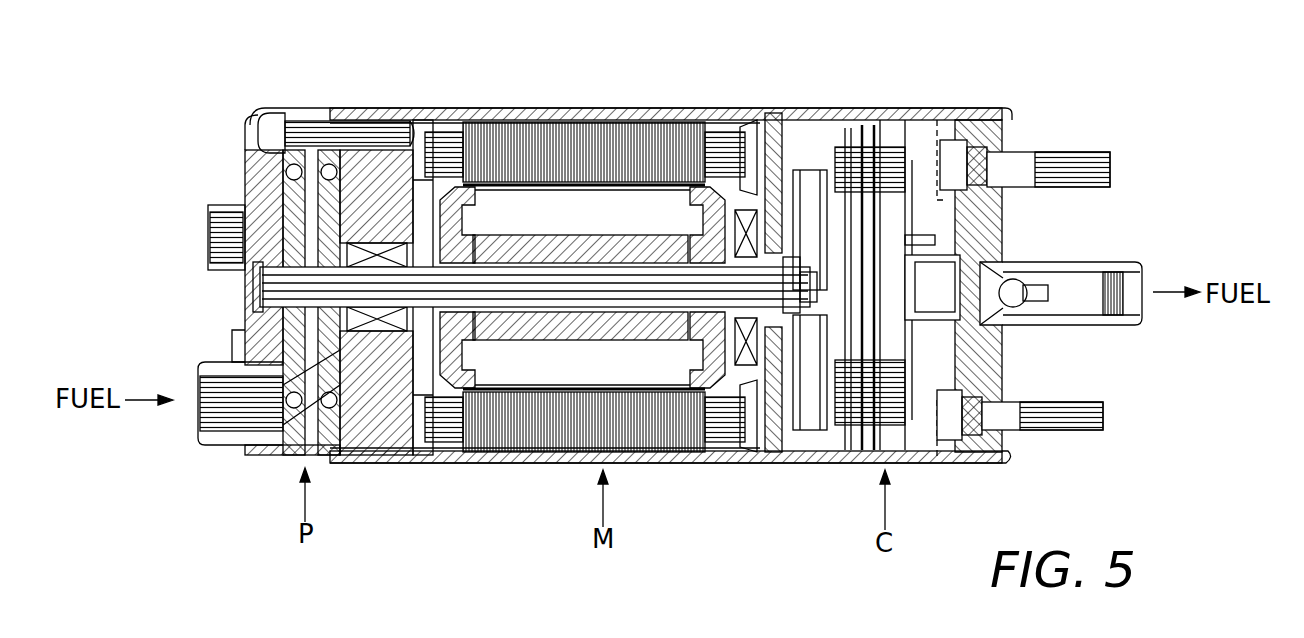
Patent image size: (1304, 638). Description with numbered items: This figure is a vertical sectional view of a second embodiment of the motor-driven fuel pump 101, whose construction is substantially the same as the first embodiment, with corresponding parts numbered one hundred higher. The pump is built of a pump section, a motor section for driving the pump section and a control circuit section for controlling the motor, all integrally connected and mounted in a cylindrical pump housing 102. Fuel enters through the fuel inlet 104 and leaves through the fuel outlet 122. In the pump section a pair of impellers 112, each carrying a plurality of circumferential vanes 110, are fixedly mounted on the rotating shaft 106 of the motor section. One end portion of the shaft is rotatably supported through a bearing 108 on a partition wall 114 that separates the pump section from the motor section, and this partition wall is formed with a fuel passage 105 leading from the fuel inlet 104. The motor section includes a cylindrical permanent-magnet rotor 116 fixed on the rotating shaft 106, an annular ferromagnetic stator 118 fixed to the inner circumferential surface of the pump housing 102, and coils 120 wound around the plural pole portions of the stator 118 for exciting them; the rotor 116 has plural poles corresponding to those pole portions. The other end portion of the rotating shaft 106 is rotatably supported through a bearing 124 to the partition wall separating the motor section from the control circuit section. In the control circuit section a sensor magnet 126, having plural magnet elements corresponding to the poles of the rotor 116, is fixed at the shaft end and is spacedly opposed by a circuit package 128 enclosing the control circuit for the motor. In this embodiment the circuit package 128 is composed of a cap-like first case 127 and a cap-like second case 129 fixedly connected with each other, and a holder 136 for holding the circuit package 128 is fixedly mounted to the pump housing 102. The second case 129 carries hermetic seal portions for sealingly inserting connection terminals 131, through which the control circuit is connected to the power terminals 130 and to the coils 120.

The motor-driven fuel pump 101 is at (438, 98).
The pump housing 102 is at (582, 108).
The fuel inlet 104 is at (200, 413).
The fuel passage 105 is at (347, 463).
The rotating shaft 106 is at (240, 290).
The bearing 108 is at (371, 240).
The circumferential vanes 110 is at (272, 160).
The impellers 112 is at (247, 350).
The partition wall 114 is at (385, 462).
The rotor 116 is at (636, 376).
The stator 118 is at (455, 108).
The coils 120 is at (656, 108).
The fuel outlet 122 is at (1138, 303).
The bearing 124 is at (748, 190).
The sensor magnet 126 is at (805, 165).
The first case 127 is at (852, 140).
The circuit package 128 is at (893, 120).
The second case 129 is at (912, 120).
The power terminals 130 is at (1100, 150).
The connection terminals 131 is at (958, 110).
The holder 136 is at (793, 460).